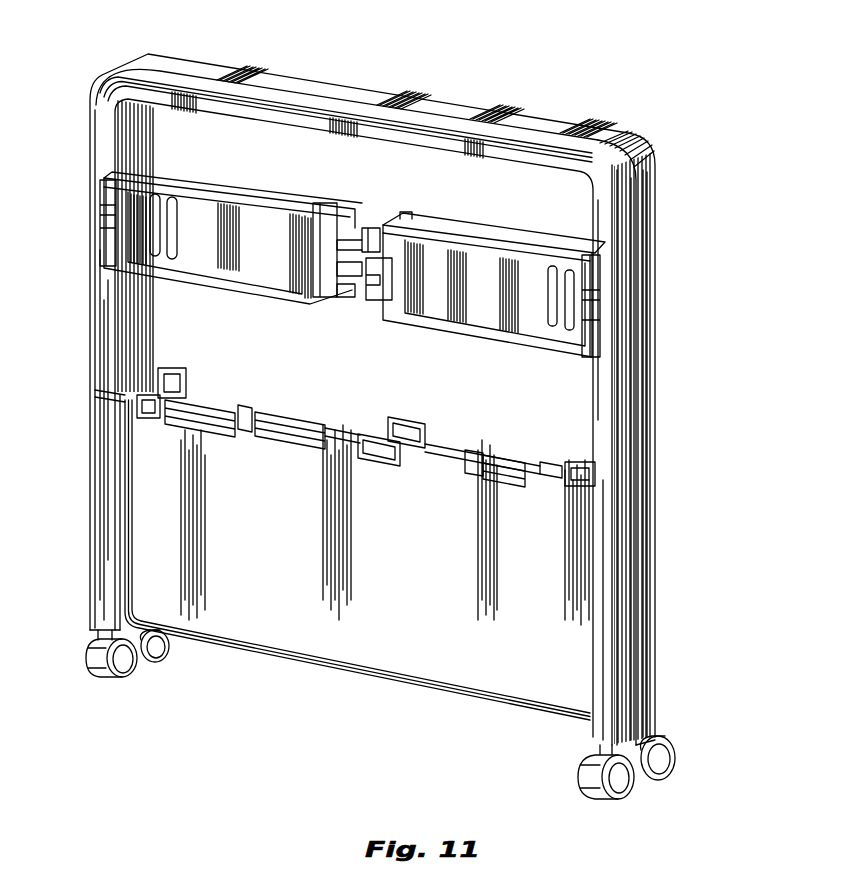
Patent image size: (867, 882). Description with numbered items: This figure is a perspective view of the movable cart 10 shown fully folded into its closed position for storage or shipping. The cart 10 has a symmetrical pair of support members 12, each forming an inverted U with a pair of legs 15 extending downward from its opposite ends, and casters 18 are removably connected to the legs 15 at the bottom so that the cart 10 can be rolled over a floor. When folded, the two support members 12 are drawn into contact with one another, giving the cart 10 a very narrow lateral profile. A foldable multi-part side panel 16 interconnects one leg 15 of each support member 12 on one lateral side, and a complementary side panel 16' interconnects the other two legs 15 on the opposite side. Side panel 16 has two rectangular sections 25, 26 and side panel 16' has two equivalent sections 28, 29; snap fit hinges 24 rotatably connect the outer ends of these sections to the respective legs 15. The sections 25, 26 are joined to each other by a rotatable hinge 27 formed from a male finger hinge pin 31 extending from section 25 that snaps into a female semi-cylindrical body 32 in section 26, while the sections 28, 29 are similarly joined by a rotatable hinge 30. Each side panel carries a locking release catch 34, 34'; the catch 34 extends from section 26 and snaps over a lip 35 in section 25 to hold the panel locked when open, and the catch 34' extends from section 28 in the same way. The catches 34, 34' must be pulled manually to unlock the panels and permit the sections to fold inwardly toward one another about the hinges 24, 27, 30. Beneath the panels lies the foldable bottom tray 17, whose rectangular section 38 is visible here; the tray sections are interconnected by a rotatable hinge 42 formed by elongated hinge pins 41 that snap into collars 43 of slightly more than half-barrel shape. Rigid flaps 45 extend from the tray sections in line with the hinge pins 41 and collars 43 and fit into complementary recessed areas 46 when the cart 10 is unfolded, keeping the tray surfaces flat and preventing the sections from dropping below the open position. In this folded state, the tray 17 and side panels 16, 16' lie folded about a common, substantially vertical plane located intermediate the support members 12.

The movable cart 10 is at (675, 160).
The support member 12 is at (291, 100).
The leg 15 is at (137, 318).
The side panel 16 is at (248, 251).
The side panel 16' is at (478, 287).
The tray 17 is at (352, 680).
The casters 18 is at (153, 660).
The rotatable hinge 24 is at (100, 207).
The section 25 is at (262, 268).
The section 26 is at (278, 156).
The rotatable hinge 27 is at (332, 200).
The section 28 is at (488, 305).
The section 29 is at (500, 218).
The rotatable hinge 30 is at (408, 212).
The male finger hinge pin 31 is at (318, 300).
The female semi-cylindrical body 32 is at (345, 300).
The locking release catch 34 is at (377, 205).
The locking release catch 34' is at (372, 307).
The lip 35 is at (303, 275).
The section 38 is at (292, 521).
The elongated hinge pin 41 is at (268, 405).
The rotatable hinge 42 is at (345, 411).
The collar 43 is at (303, 412).
The rigid flap 45 is at (402, 418).
The recessed area 46 is at (366, 432).